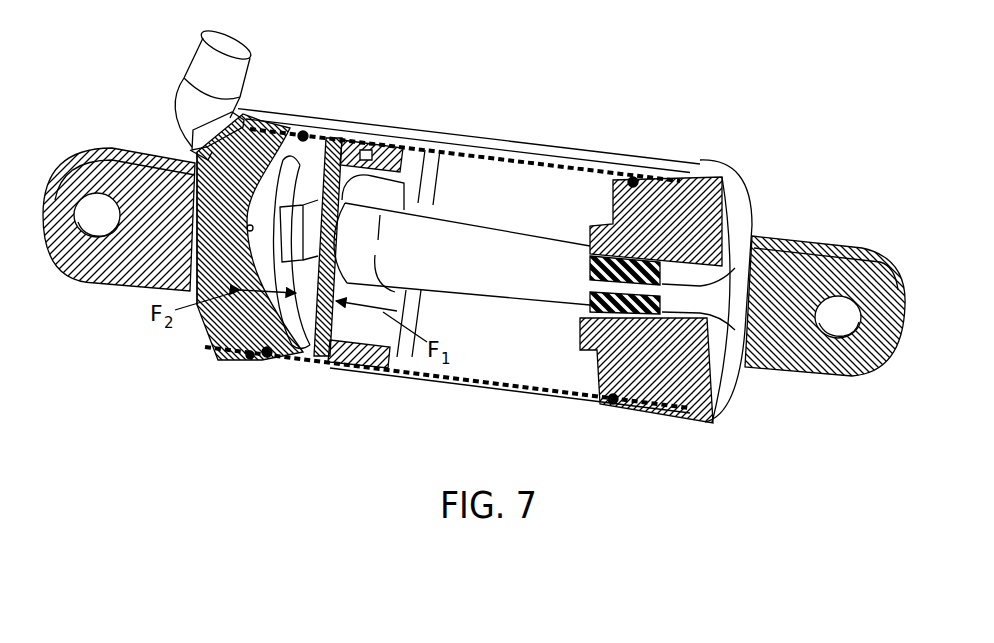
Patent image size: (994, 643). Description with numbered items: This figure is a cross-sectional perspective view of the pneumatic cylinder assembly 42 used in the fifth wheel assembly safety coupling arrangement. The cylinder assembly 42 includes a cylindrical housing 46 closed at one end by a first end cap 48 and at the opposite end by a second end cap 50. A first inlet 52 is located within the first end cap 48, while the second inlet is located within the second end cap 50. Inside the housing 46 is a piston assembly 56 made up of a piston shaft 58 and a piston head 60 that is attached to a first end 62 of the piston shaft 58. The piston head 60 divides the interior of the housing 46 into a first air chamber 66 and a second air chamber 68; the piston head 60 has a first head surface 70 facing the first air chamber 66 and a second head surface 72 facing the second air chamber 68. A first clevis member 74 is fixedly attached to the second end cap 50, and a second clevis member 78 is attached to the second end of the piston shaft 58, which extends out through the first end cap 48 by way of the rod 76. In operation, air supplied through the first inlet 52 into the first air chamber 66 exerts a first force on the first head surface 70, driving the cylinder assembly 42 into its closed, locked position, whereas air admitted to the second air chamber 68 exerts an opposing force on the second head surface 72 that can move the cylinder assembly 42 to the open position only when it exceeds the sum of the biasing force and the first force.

The pneumatic cylinder assembly 42 is at (532, 50).
The cylindrical housing 46 is at (575, 155).
The first end cap 48 is at (740, 177).
The second end cap 50 is at (203, 338).
The first inlet 52 is at (190, 53).
The piston assembly 56 is at (476, 225).
The piston shaft 58 is at (433, 150).
The piston head 60 is at (395, 360).
The first end 62 is at (382, 290).
The first air chamber 66 is at (508, 358).
The second air chamber 68 is at (263, 302).
The first head surface 70 is at (333, 367).
The second head surface 72 is at (303, 131).
The first clevis member 74 is at (128, 147).
The rod 76 is at (732, 277).
The second clevis member 78 is at (833, 243).